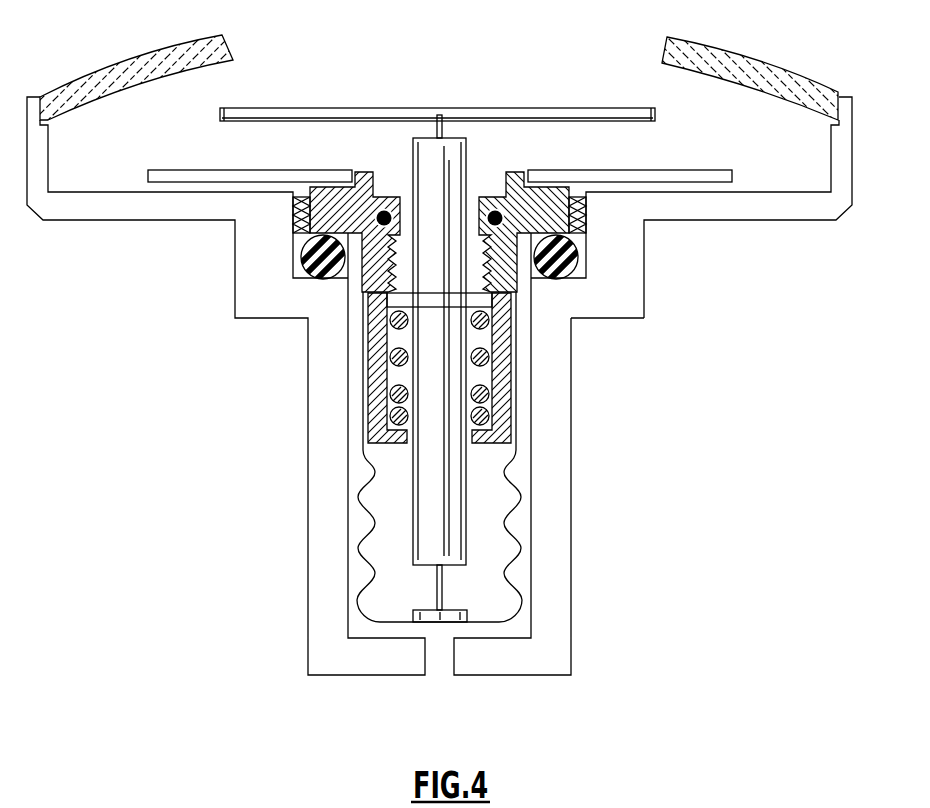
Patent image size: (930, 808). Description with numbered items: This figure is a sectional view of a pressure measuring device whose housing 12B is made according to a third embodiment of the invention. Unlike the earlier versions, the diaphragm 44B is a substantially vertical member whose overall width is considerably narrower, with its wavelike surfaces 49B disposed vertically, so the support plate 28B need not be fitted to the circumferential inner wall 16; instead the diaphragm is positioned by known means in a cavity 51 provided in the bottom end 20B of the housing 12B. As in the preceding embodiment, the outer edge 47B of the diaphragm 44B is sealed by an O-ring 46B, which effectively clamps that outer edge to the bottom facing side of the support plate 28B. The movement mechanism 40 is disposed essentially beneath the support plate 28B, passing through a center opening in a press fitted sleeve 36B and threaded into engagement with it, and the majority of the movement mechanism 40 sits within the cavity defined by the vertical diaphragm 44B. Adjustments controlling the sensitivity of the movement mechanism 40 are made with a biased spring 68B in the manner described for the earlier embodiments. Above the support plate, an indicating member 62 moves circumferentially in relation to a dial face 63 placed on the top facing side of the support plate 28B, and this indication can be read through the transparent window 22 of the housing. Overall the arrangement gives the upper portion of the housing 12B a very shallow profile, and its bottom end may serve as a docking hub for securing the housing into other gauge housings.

The transparent window 22 is at (748, 54).
The indicating member 62 is at (467, 108).
The press fitted sleeve 36B is at (333, 200).
The dial face 63 is at (683, 170).
The circumferential inner wall 16 is at (830, 160).
The support plate 28B is at (295, 223).
The outer edge 47B is at (302, 250).
The cavity 51 is at (293, 270).
The housing 12B is at (627, 263).
The bottom end 20B is at (643, 317).
The O-ring 46B is at (563, 278).
The movement mechanism 40 is at (422, 380).
The biased spring 68B is at (395, 417).
The wavelike surfaces 49B is at (520, 543).
The diaphragm 44B is at (518, 608).